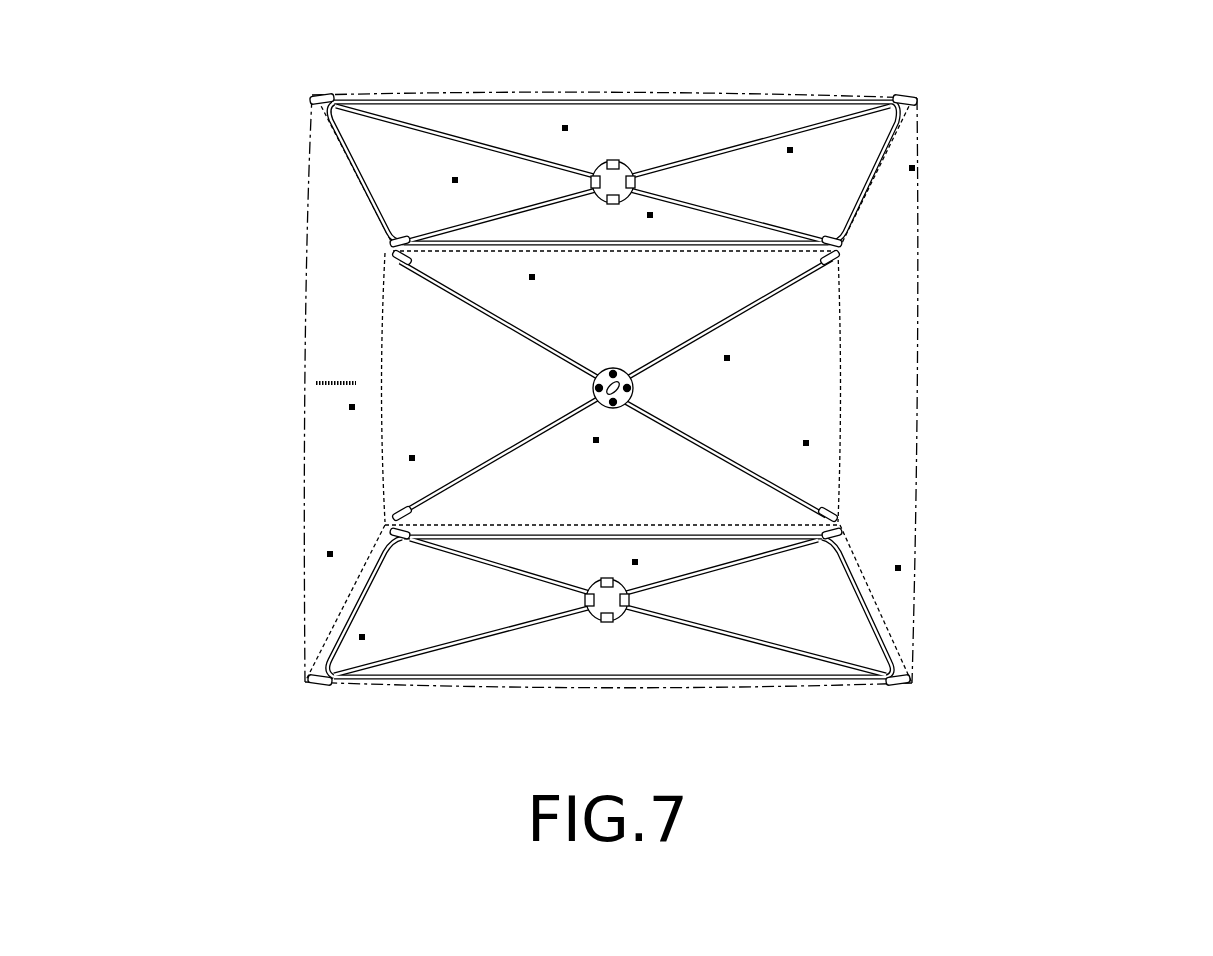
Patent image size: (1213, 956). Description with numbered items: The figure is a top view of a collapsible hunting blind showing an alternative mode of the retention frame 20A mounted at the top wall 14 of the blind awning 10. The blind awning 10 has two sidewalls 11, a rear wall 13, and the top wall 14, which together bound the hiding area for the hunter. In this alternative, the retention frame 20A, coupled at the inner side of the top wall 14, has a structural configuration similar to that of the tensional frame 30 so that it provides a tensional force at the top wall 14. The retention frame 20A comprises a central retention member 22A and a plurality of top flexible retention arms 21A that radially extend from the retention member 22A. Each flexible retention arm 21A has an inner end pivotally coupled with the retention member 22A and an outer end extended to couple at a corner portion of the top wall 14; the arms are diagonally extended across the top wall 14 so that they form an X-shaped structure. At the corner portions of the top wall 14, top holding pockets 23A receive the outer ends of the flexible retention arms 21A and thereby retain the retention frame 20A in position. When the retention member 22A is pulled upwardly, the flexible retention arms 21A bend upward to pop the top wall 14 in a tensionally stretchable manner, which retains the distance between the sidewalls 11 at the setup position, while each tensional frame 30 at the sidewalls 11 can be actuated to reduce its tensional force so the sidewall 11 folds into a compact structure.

The blind awning 10 is at (942, 158).
The retention frame 20A is at (996, 215).
The sidewall 11 is at (836, 209).
The rear wall 13 is at (900, 377).
The top wall 14 is at (815, 369).
The top flexible retention arm 21A is at (740, 312).
The retention member 22A is at (596, 394).
The top holding pocket 23A is at (387, 243).
The tensional frame 30 is at (603, 157).